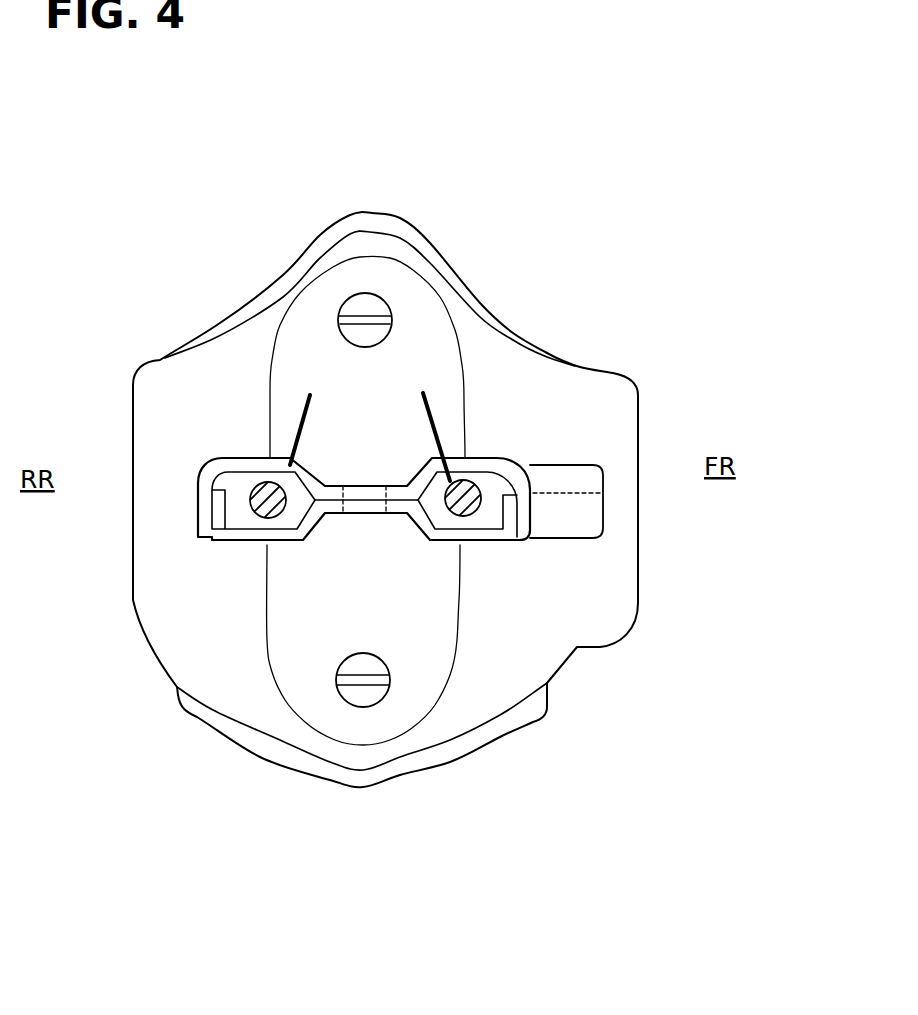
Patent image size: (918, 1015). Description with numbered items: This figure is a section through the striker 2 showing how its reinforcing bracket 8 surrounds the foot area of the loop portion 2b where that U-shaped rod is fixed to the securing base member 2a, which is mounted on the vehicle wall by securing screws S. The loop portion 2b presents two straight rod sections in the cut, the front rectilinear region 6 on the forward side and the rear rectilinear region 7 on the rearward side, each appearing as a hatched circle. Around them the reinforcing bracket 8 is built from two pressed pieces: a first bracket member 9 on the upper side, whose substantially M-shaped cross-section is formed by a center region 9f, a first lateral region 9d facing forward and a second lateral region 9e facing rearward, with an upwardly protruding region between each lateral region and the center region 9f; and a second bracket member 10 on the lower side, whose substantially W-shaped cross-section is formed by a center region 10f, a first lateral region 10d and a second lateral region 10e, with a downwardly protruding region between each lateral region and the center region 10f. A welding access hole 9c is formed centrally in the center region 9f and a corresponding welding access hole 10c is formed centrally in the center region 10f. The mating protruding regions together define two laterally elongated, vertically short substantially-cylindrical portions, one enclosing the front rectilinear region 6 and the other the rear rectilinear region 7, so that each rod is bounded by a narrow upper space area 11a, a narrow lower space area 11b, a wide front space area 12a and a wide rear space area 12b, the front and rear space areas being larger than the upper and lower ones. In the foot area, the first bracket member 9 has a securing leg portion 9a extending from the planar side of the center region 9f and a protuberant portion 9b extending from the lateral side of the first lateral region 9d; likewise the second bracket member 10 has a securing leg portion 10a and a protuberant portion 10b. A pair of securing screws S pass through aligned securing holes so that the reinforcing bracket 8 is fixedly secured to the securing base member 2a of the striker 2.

The striker 2 is at (497, 497).
The securing base member 2a is at (623, 622).
The loop portion 2b is at (226, 466).
The front rectilinear region 6 is at (456, 447).
The rear rectilinear region 7 is at (280, 451).
The reinforcing bracket 8 is at (476, 482).
The first bracket member 9 is at (291, 368).
The securing leg portion 9a is at (417, 350).
The protuberant portion 9b is at (573, 483).
The welding access hole 9c is at (367, 490).
The first lateral region 9d is at (527, 515).
The second lateral region 9e is at (207, 515).
The center region 9f is at (327, 485).
The second bracket member 10 is at (290, 670).
The securing leg portion 10a is at (440, 643).
The protuberant portion 10b is at (588, 520).
The welding access hole 10c is at (375, 516).
The first lateral region 10d is at (512, 522).
The second lateral region 10e is at (223, 543).
The center region 10f is at (330, 517).
The upper space area 11a is at (266, 482).
The lower space area 11b is at (262, 518).
The front space area 12a is at (264, 545).
The rear space area 12b is at (237, 503).
The securing screw S is at (364, 307).